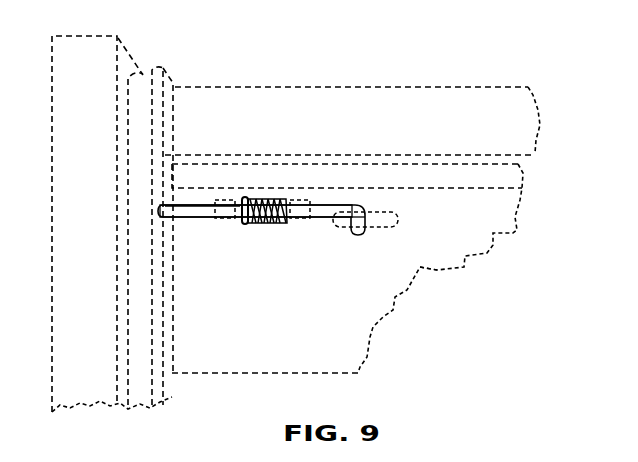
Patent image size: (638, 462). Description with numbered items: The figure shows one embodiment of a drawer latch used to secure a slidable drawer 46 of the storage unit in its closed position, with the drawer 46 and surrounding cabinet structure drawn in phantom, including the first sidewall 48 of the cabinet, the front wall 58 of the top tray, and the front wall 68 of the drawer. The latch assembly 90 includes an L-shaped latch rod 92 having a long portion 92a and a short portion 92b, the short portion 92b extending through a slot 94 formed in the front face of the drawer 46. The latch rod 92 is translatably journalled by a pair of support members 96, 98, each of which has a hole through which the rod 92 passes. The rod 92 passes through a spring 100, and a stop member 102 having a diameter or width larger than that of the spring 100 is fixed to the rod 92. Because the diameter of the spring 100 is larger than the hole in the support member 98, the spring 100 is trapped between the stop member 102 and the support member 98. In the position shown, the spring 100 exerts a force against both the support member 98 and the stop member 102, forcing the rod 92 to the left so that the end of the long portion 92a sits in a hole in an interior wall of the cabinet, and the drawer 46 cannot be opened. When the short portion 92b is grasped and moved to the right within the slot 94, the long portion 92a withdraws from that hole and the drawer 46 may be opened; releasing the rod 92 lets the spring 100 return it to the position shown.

The slidable drawer 46 is at (520, 213).
The first sidewall 48 is at (70, 244).
The front wall 58 is at (427, 115).
The front wall 68 is at (353, 328).
The latch assembly 90 is at (235, 272).
The L-shaped latch rod 92 is at (337, 202).
The long portion 92a is at (190, 210).
The short portion 92b is at (397, 222).
The slot 94 is at (380, 230).
The support member 96 is at (228, 222).
The support member 98 is at (297, 220).
The spring 100 is at (268, 207).
The stop member 102 is at (246, 223).